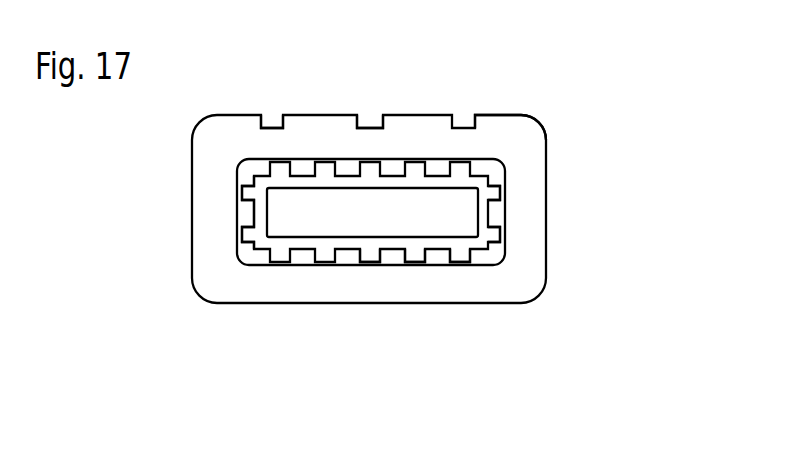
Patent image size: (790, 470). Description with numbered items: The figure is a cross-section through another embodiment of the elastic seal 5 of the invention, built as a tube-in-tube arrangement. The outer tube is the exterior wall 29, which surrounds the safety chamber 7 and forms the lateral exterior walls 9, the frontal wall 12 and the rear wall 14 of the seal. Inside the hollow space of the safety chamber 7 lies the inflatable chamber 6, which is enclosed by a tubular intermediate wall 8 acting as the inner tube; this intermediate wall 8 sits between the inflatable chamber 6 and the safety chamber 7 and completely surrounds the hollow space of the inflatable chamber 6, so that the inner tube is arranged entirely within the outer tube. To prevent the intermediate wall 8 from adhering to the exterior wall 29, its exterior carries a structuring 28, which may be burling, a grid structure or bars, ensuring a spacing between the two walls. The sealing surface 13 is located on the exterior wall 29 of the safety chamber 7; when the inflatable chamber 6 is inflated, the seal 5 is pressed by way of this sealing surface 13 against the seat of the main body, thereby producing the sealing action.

The seal 5 is at (608, 88).
The inflatable chamber 6 is at (352, 215).
The safety chamber 7 is at (437, 167).
The intermediate wall 8 is at (302, 240).
The lateral exterior walls 9 is at (208, 205).
The frontal wall 12 is at (322, 133).
The sealing surface 13 is at (408, 115).
The rear wall 14 is at (375, 290).
The structuring 28 is at (495, 238).
The exterior wall 29 is at (505, 135).